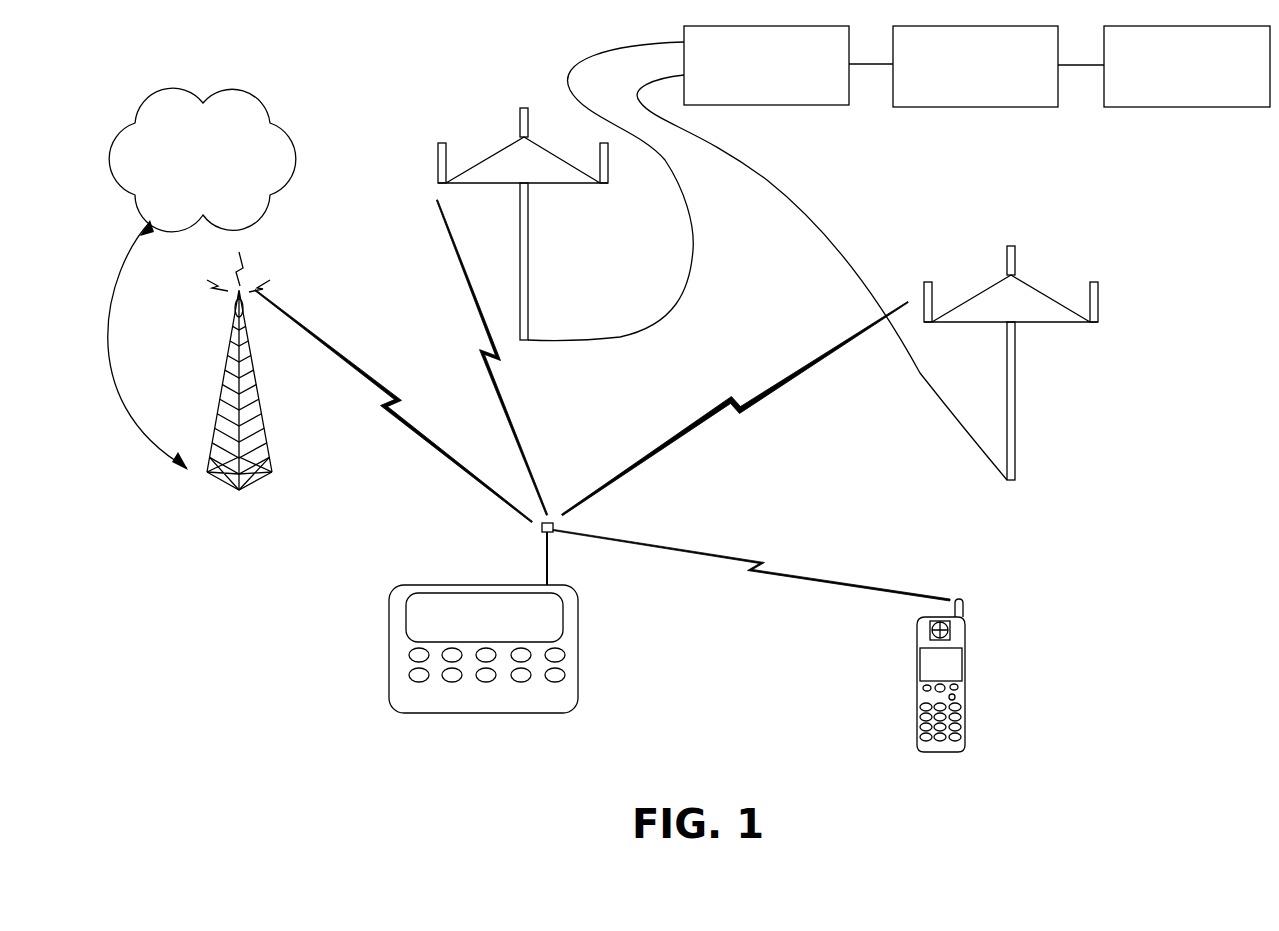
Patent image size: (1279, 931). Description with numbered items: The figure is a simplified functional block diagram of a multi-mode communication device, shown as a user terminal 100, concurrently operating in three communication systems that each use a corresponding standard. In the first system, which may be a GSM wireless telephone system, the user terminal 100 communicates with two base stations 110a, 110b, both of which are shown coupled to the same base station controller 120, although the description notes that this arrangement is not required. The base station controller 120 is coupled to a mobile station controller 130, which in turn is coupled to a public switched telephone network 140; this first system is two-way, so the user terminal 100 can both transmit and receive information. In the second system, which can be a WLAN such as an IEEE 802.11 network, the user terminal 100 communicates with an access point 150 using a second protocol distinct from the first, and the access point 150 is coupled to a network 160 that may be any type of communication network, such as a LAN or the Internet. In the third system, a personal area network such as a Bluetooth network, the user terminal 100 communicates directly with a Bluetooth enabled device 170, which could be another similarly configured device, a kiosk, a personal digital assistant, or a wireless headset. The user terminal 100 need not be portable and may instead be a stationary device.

The user terminal 100 is at (380, 696).
The base station 110a is at (593, 244).
The base station 110b is at (1060, 438).
The base station controller 120 is at (782, 113).
The mobile station controller 130 is at (997, 113).
The public switched telephone network 140 is at (1200, 113).
The access point 150 is at (232, 500).
The network 160 is at (125, 111).
The Bluetooth enabled device 170 is at (950, 753).